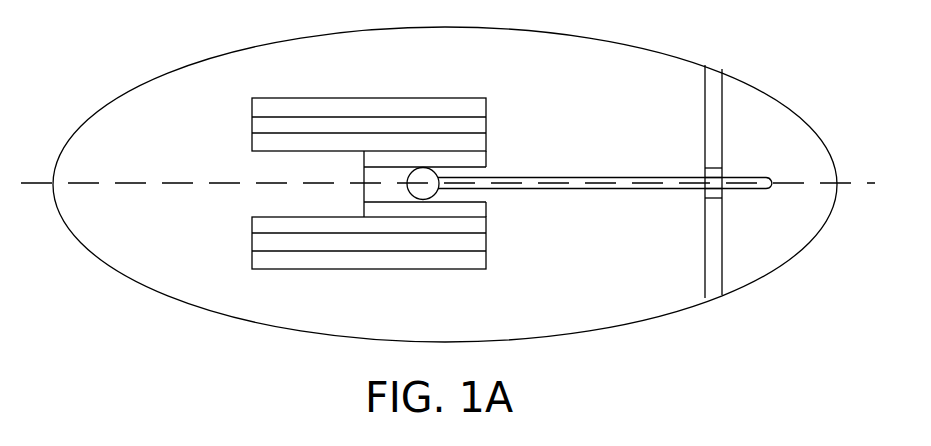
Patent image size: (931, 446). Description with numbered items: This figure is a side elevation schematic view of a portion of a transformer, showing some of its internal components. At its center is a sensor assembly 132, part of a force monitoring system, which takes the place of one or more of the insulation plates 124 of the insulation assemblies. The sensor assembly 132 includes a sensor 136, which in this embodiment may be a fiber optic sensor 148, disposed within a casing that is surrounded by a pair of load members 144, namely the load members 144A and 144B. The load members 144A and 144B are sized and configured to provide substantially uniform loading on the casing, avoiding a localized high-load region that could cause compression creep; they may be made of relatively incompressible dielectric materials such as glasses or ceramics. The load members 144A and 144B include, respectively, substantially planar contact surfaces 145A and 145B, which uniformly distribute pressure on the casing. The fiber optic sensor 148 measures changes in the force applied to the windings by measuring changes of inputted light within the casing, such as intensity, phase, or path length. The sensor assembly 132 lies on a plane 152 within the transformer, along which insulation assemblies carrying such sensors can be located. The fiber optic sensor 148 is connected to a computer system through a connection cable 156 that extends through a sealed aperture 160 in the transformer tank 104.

The transformer tank 104 is at (705, 108).
The insulation plates 124 is at (487, 103).
The sensor assembly 132 is at (514, 200).
The sensor 136 is at (422, 167).
The load members 144 is at (373, 220).
The load member 144A is at (487, 160).
The load member 144B is at (496, 203).
The planar contact surface 145A is at (373, 168).
The planar contact surface 145B is at (406, 188).
The fiber optic sensor 148 is at (406, 178).
The plane 152 is at (156, 185).
The connection cable 156 is at (728, 180).
The sealed aperture 160 is at (730, 196).